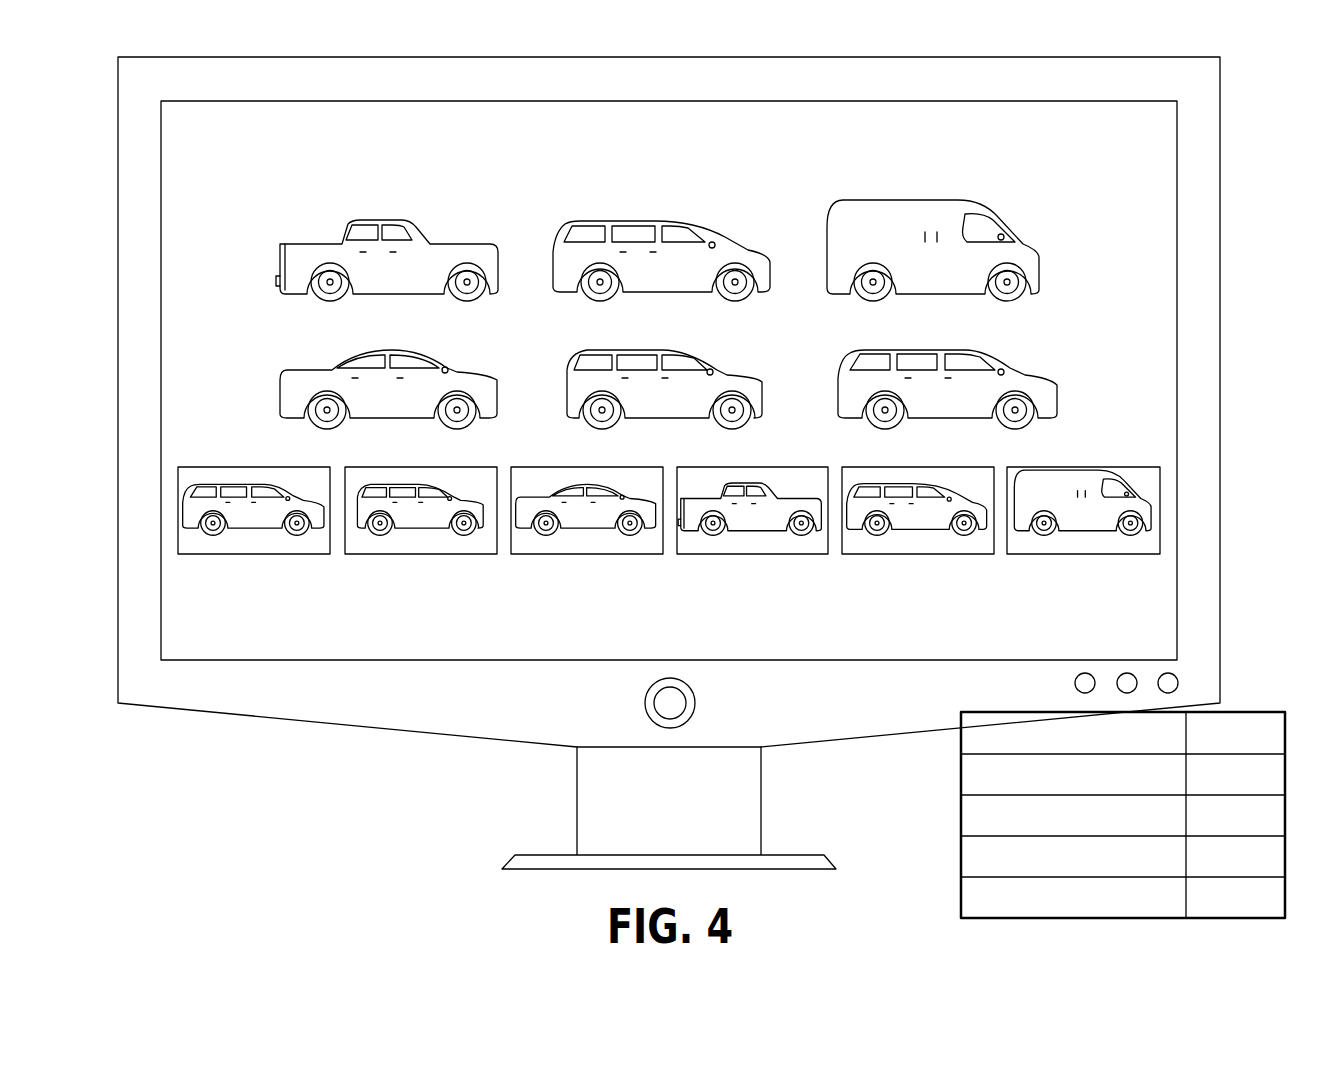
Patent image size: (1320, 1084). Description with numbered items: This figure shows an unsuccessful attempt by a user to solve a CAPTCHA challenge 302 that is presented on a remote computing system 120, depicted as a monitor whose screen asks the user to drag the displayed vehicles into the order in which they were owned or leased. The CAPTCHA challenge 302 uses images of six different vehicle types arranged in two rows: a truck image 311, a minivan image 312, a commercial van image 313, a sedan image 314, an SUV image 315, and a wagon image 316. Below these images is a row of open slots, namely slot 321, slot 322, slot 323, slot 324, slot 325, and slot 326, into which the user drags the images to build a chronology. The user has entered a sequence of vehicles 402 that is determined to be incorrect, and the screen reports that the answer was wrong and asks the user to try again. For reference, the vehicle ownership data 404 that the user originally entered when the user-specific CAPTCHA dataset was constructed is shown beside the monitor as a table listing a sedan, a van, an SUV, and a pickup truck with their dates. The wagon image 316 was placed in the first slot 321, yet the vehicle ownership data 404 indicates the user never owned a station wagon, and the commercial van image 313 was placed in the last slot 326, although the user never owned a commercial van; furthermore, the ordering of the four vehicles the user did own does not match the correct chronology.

The remote computing system 120 is at (1221, 160).
The CAPTCHA challenge 302 is at (1150, 215).
The truck image 311 is at (282, 258).
The minivan image 312 is at (737, 298).
The commercial van image 313 is at (1003, 240).
The sedan image 314 is at (280, 390).
The SUV image 315 is at (570, 380).
The wagon image 316 is at (1012, 375).
The slot 321 is at (238, 555).
The slot 322 is at (415, 555).
The slot 323 is at (553, 467).
The slot 324 is at (780, 467).
The slot 325 is at (925, 555).
The slot 326 is at (1078, 555).
The sequence of vehicles 402 is at (158, 498).
The vehicle ownership data 404 is at (1248, 712).